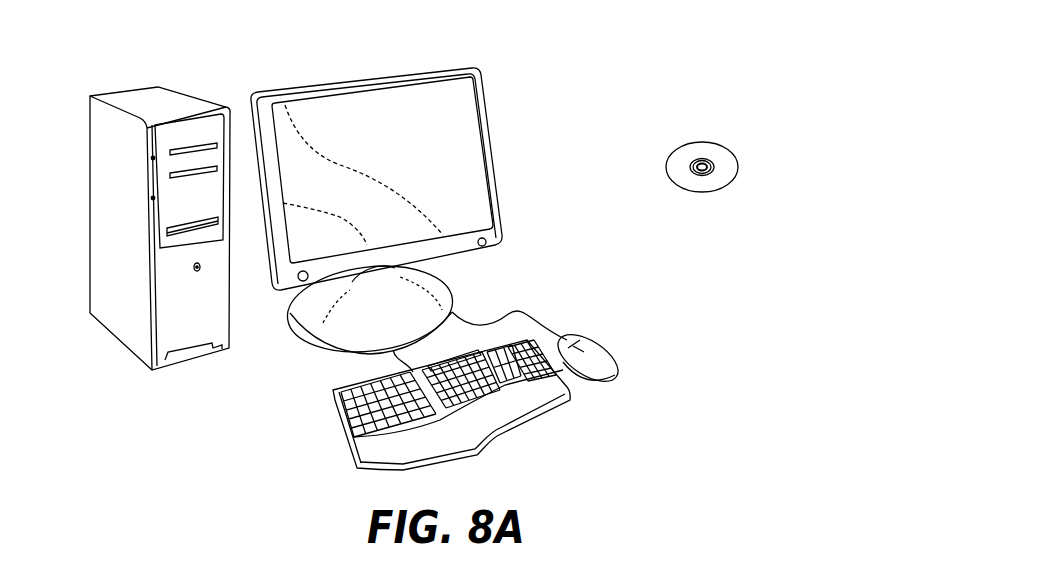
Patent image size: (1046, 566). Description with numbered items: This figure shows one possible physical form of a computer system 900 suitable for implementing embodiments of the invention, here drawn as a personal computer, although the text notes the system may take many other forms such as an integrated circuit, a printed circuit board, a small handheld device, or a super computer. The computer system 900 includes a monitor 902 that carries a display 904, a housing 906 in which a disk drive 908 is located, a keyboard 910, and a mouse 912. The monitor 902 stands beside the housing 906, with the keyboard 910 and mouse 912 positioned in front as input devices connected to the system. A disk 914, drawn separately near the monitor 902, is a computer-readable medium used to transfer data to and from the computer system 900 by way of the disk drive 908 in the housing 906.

The computer system 900 is at (620, 48).
The monitor 902 is at (498, 175).
The display 904 is at (450, 108).
The housing 906 is at (145, 98).
The disk drive 908 is at (207, 220).
The keyboard 910 is at (342, 435).
The mouse 912 is at (610, 348).
The disk 914 is at (722, 142).